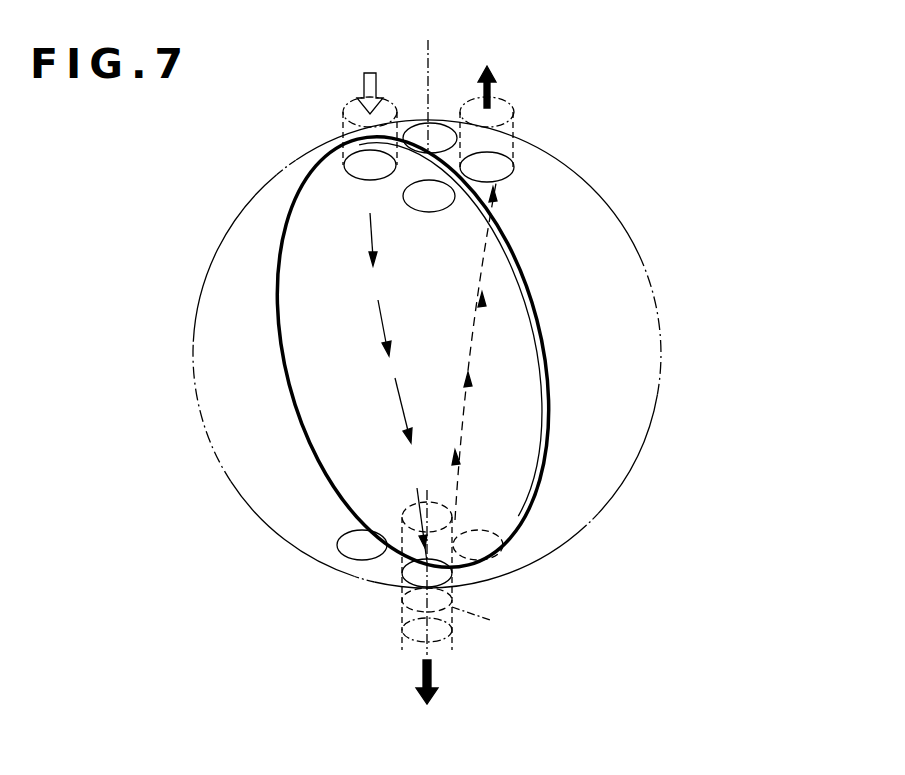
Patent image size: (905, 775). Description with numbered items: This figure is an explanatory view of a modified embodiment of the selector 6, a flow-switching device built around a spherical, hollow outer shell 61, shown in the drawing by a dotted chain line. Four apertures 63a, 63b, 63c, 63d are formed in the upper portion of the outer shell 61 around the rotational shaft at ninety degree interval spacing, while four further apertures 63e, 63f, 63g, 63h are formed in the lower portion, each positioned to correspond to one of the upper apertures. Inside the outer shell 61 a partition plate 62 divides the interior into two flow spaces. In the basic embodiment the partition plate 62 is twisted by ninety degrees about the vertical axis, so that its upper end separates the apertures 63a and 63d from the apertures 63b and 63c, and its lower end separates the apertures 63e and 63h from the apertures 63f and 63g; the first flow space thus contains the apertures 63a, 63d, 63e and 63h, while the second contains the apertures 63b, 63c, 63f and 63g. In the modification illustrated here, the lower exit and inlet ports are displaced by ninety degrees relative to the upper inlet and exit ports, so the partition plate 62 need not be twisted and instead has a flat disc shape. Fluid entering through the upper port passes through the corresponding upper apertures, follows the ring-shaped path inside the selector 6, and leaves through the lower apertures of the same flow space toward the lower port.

The selector 6 is at (645, 247).
The outer shell 61 is at (650, 420).
The partition plate 62 is at (546, 332).
The aperture 63a is at (363, 180).
The aperture 63b is at (430, 212).
The aperture 63c is at (510, 178).
The aperture 63d is at (432, 123).
The aperture 63e is at (343, 534).
The aperture 63f is at (407, 582).
The aperture 63g is at (505, 552).
The aperture 63h is at (457, 520).